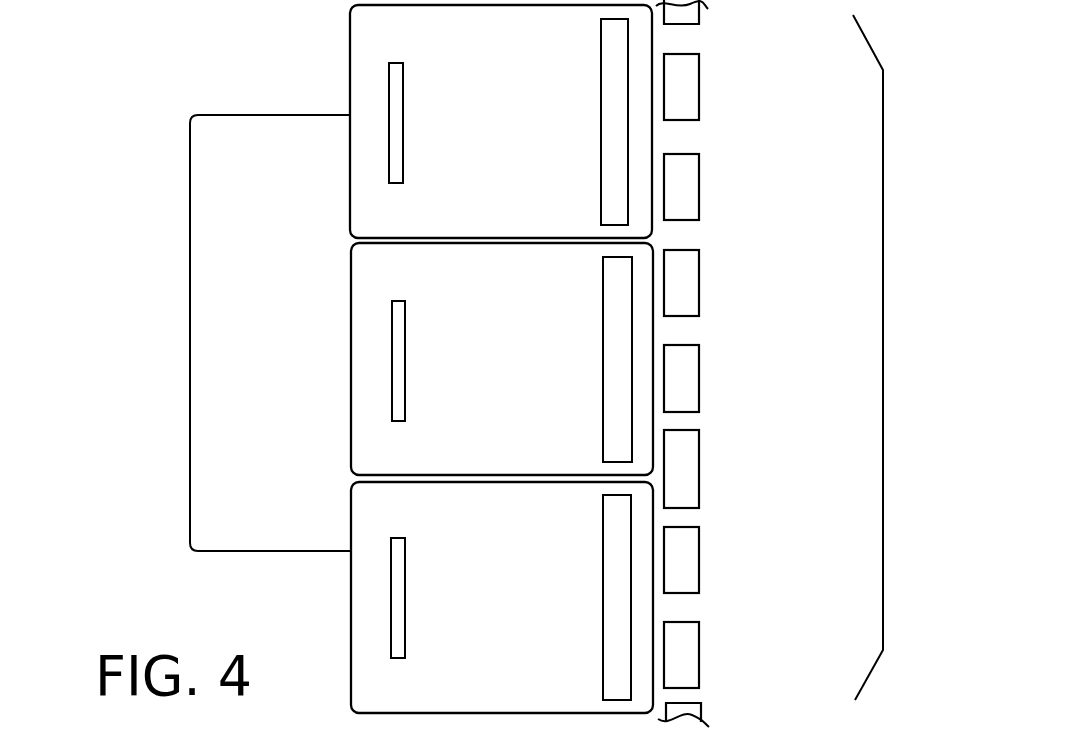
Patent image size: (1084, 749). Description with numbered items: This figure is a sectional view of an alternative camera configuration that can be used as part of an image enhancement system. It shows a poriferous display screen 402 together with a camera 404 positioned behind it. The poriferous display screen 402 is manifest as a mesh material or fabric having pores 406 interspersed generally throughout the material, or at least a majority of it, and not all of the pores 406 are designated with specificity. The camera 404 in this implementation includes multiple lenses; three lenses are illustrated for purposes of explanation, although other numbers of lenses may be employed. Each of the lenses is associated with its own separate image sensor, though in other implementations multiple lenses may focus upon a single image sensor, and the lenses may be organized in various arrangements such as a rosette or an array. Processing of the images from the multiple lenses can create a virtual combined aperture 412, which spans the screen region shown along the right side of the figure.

The poriferous display screen 402 is at (711, 170).
The camera 404 is at (280, 114).
The pores 406 is at (706, 25).
The virtual combined aperture 412 is at (884, 131).